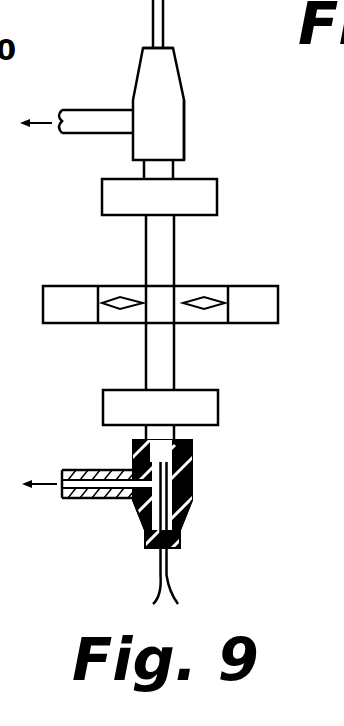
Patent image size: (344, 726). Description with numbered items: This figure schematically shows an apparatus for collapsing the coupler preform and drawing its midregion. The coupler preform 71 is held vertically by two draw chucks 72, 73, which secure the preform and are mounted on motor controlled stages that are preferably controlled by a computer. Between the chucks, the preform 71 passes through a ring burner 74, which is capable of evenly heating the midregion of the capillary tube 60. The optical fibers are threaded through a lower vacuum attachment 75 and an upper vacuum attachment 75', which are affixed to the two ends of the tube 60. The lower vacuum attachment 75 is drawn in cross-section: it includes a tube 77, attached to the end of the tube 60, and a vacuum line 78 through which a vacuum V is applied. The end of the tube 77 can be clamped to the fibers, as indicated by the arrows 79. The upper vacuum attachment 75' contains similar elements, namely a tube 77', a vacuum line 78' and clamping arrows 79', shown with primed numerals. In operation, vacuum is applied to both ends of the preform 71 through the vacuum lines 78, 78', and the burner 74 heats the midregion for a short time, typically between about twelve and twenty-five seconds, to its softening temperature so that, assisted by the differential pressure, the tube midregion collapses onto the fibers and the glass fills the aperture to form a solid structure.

The arrows 79' is at (184, 36).
The tube 77' is at (196, 89).
The upper vacuum attachment 75' is at (226, 130).
The vacuum line 78' is at (66, 104).
The chuck 72 is at (217, 197).
The coupler preform 71 is at (178, 258).
The ring burner 74 is at (278, 300).
The chuck 73 is at (218, 408).
The tube 60 is at (167, 432).
The vacuum attachment 75 is at (196, 502).
The tube 77 is at (203, 518).
The vacuum line 78 is at (80, 508).
The arrows 79 is at (186, 562).